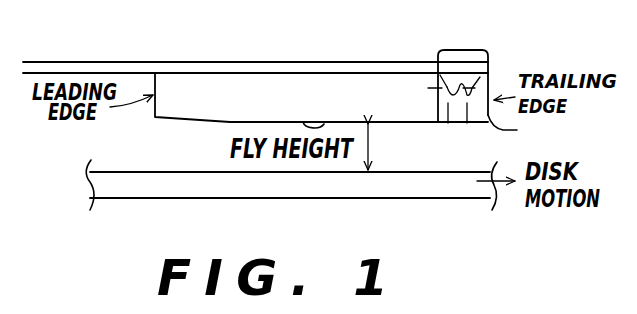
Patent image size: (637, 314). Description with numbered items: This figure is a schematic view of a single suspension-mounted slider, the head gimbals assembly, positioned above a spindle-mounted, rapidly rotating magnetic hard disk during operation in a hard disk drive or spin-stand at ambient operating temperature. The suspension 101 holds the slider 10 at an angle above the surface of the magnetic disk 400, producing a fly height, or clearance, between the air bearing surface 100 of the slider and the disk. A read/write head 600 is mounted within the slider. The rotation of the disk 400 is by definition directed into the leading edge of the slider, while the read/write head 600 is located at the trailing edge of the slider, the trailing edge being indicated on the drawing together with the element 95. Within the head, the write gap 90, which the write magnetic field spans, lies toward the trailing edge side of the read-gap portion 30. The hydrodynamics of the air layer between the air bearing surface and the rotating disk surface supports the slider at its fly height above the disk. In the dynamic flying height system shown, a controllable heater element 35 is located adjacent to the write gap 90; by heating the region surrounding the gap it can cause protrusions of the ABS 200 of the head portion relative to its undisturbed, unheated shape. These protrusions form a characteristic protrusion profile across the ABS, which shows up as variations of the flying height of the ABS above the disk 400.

The suspension 101 is at (83, 68).
The slider 10 is at (245, 82).
The air bearing surface 100 is at (324, 127).
The read/write head 600 is at (463, 51).
The heater element 35 is at (437, 74).
The pole tip 95 is at (480, 77).
The read-gap portion 30 is at (448, 123).
The write gap 90 is at (467, 123).
The ABS of the head portion 200 is at (521, 129).
The magnetic disk 400 is at (445, 188).